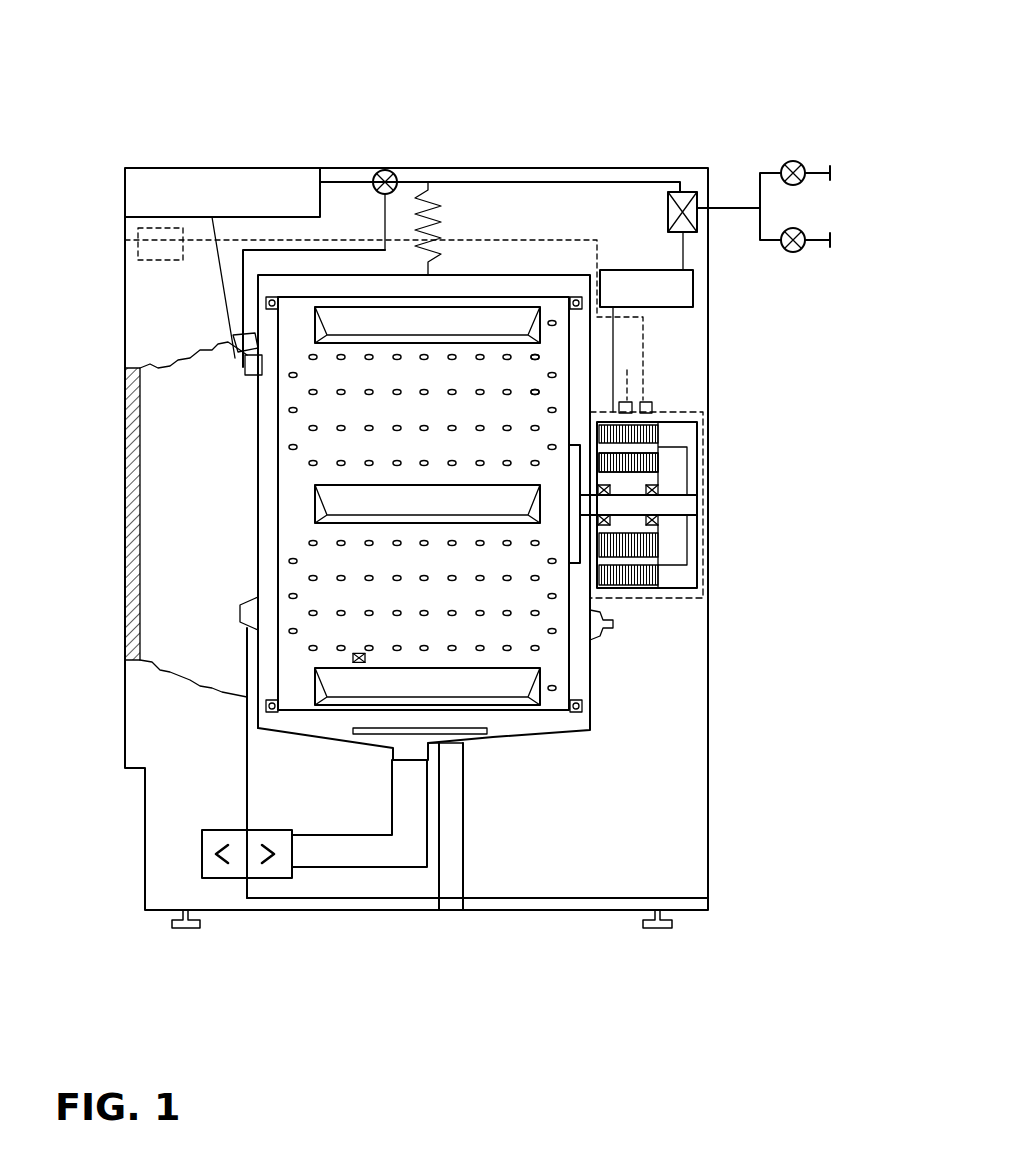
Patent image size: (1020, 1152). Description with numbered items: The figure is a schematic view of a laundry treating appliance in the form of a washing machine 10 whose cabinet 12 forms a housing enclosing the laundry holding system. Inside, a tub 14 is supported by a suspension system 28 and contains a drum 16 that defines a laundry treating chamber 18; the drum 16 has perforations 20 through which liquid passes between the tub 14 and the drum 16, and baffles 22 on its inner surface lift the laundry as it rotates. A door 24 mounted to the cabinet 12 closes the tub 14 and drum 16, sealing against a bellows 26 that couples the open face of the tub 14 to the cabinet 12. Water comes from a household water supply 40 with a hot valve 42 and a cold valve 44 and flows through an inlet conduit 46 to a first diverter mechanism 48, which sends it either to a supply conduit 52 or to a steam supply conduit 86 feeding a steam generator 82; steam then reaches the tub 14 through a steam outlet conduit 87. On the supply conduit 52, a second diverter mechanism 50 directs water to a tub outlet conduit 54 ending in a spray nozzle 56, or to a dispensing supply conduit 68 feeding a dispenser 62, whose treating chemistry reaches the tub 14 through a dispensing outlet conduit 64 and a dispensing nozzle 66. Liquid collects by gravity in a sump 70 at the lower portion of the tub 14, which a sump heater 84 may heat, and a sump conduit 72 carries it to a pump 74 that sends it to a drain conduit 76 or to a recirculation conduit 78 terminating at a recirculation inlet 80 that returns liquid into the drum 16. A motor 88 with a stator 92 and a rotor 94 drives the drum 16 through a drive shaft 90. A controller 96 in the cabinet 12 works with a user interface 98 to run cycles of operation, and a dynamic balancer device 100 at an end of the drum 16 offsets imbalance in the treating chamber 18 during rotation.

The washing machine 10 is at (649, 23).
The cabinet 12 is at (626, 160).
The tub 14 is at (461, 272).
The drum 16 is at (350, 295).
The laundry treating chamber 18 is at (425, 425).
The perforations 20 is at (539, 392).
The baffles 22 is at (520, 692).
The door 24 is at (125, 490).
The bellows 26 is at (167, 665).
The suspension system 28 is at (417, 203).
The household water supply 40 is at (838, 136).
The valve 42 is at (821, 158).
The valve 44 is at (800, 254).
The inlet conduit 46 is at (731, 205).
The first diverter mechanism 48 is at (688, 192).
The second diverter mechanism 50 is at (383, 168).
The supply conduit 52 is at (556, 181).
The tub outlet conduit 54 is at (305, 240).
The spray nozzle 56 is at (248, 346).
The dispenser 62 is at (258, 196).
The dispensing outlet conduit 64 is at (252, 332).
The dispensing nozzle 66 is at (246, 373).
The dispensing supply conduit 68 is at (345, 181).
The sump 70 is at (472, 752).
The sump conduit 72 is at (403, 847).
The pump 74 is at (224, 890).
The drain conduit 76 is at (719, 900).
The recirculation conduit 78 is at (245, 770).
The recirculation inlet 80 is at (252, 613).
The steam generator 82 is at (695, 290).
The sump heater 84 is at (493, 737).
The steam supply conduit 86 is at (700, 236).
The steam outlet conduit 87 is at (613, 618).
The motor 88 is at (708, 410).
The drive shaft 90 is at (670, 508).
The stator 92 is at (652, 425).
The rotor 94 is at (662, 462).
The controller 96 is at (158, 263).
The user interface 98 is at (118, 243).
The dynamic balancer device 100 is at (268, 290).